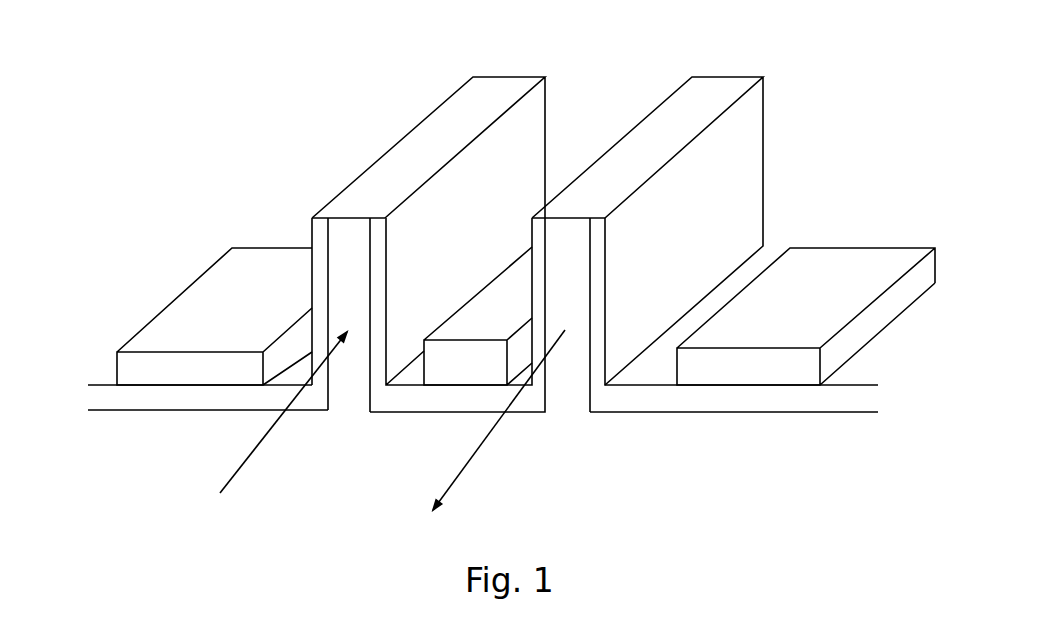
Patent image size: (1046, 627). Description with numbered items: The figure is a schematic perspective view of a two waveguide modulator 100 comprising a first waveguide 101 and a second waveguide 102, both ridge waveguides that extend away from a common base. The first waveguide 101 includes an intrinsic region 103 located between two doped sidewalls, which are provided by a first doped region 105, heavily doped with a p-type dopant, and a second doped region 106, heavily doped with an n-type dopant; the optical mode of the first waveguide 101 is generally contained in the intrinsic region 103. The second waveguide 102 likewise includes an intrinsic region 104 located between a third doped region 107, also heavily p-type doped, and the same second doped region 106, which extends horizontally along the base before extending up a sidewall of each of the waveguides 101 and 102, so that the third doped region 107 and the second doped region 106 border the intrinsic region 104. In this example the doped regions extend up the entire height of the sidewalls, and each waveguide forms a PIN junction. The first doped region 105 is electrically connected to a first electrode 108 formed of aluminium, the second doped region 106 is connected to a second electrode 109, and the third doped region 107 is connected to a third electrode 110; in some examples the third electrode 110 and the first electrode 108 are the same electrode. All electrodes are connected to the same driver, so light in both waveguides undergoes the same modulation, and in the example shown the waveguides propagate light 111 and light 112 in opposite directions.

The two waveguide modulator 100 is at (498, 270).
The first waveguide 101 is at (403, 140).
The second waveguide 102 is at (637, 152).
The intrinsic region 103 is at (343, 247).
The intrinsic region 104 is at (573, 275).
The first doped region 105 is at (315, 227).
The second doped region 106 is at (538, 278).
The third doped region 107 is at (600, 342).
The first electrode 108 is at (190, 285).
The second electrode 109 is at (436, 367).
The third electrode 110 is at (858, 258).
The light 111 is at (230, 476).
The light 112 is at (450, 490).